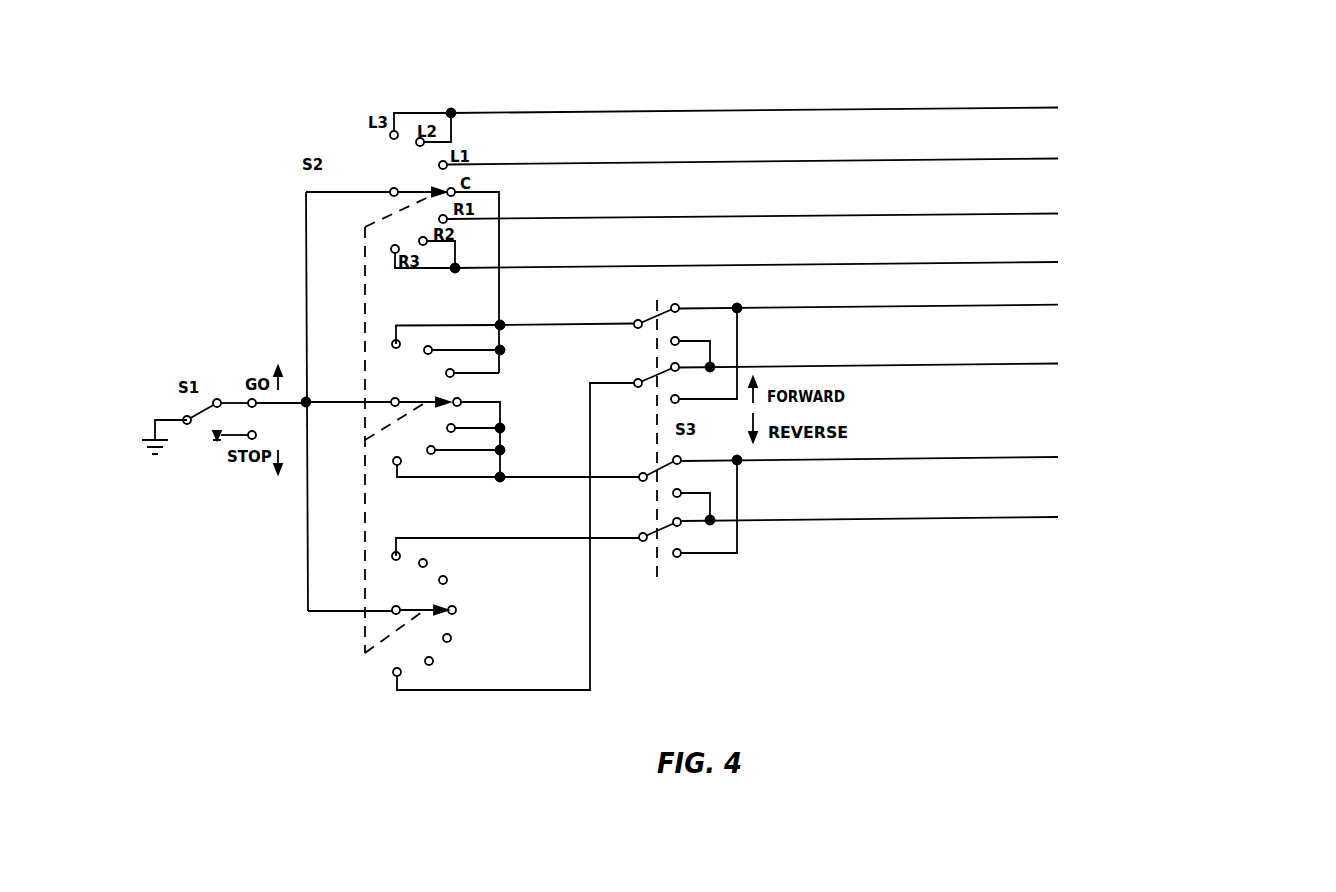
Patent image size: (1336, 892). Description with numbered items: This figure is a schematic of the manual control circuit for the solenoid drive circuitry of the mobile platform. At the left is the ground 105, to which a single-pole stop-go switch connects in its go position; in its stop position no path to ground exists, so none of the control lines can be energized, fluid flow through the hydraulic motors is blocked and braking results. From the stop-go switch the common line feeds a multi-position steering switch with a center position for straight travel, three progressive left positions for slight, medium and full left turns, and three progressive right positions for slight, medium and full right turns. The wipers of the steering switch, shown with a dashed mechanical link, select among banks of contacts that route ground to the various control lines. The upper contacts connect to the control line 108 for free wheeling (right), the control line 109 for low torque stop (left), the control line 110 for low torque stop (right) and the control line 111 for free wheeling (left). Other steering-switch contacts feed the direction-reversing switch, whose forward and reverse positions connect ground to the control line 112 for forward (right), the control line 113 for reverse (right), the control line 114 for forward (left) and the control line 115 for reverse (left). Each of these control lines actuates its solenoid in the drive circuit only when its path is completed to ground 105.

The ground 105 is at (167, 420).
The control line 108 is at (962, 108).
The control line 109 is at (962, 158).
The control line 110 is at (963, 214).
The control line 111 is at (962, 263).
The control line 112 is at (965, 304).
The control line 113 is at (973, 362).
The control line 114 is at (970, 456).
The control line 115 is at (975, 517).